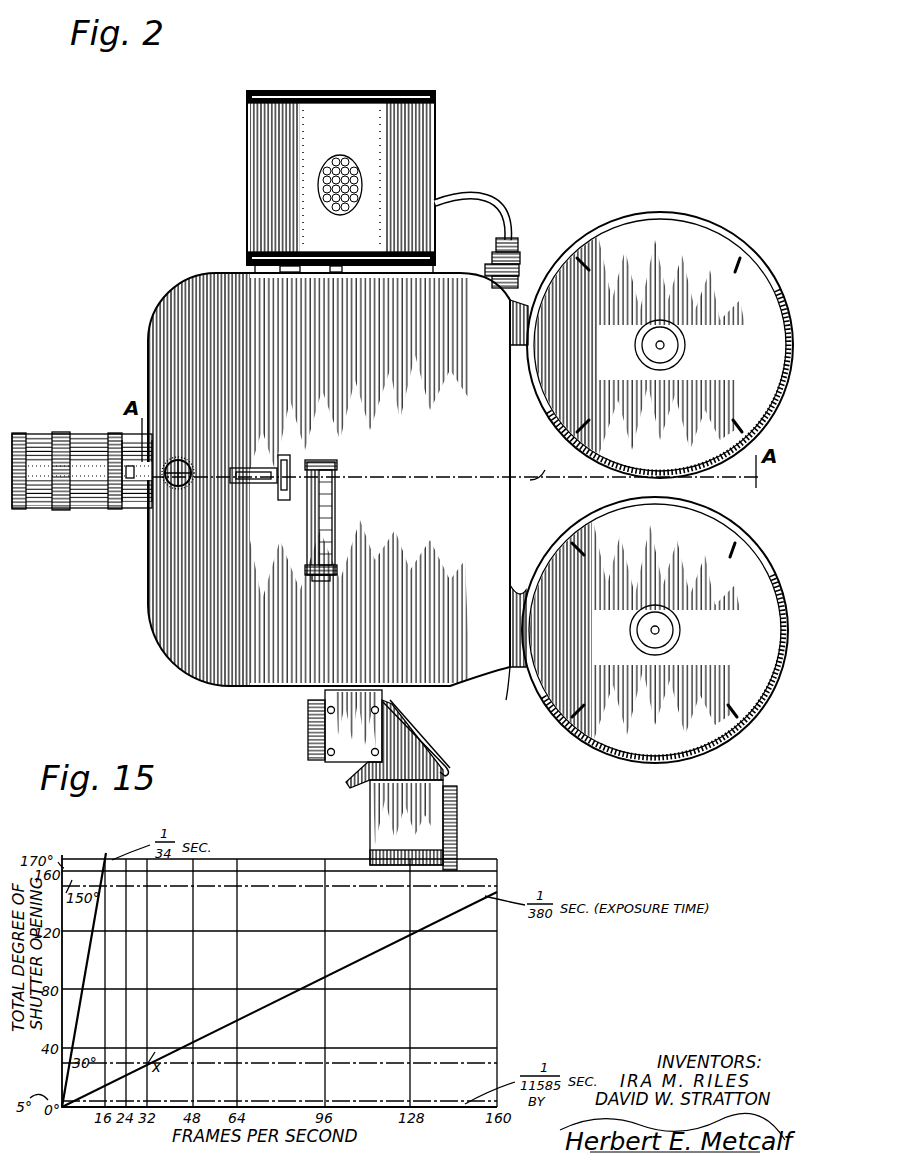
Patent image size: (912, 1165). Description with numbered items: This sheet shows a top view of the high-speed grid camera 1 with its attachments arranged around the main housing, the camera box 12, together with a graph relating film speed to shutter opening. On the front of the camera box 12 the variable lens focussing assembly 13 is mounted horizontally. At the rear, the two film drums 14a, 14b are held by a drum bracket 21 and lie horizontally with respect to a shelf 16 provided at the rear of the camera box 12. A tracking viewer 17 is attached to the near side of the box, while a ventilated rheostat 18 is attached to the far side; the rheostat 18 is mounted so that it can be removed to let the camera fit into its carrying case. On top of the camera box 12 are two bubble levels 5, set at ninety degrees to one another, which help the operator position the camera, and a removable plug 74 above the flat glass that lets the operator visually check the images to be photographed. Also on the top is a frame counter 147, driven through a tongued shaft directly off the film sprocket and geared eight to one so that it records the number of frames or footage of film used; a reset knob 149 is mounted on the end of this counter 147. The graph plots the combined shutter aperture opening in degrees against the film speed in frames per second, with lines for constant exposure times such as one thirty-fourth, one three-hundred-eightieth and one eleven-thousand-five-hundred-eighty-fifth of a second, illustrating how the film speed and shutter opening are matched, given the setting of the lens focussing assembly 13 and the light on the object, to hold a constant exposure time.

The camera 1 is at (205, 690).
The bubble levels 5 is at (284, 500).
The camera box 12 is at (462, 475).
The variable lens focussing assembly 13 is at (42, 510).
The film drum 14a is at (660, 345).
The film drum 14b is at (655, 630).
The shelf 16 is at (500, 690).
The tracking viewer 17 is at (352, 800).
The ventilated rheostat 18 is at (352, 139).
The drum bracket 21 is at (548, 495).
The removable plug 74 is at (172, 486).
The frame counter 147 is at (337, 510).
The reset knob 149 is at (330, 578).